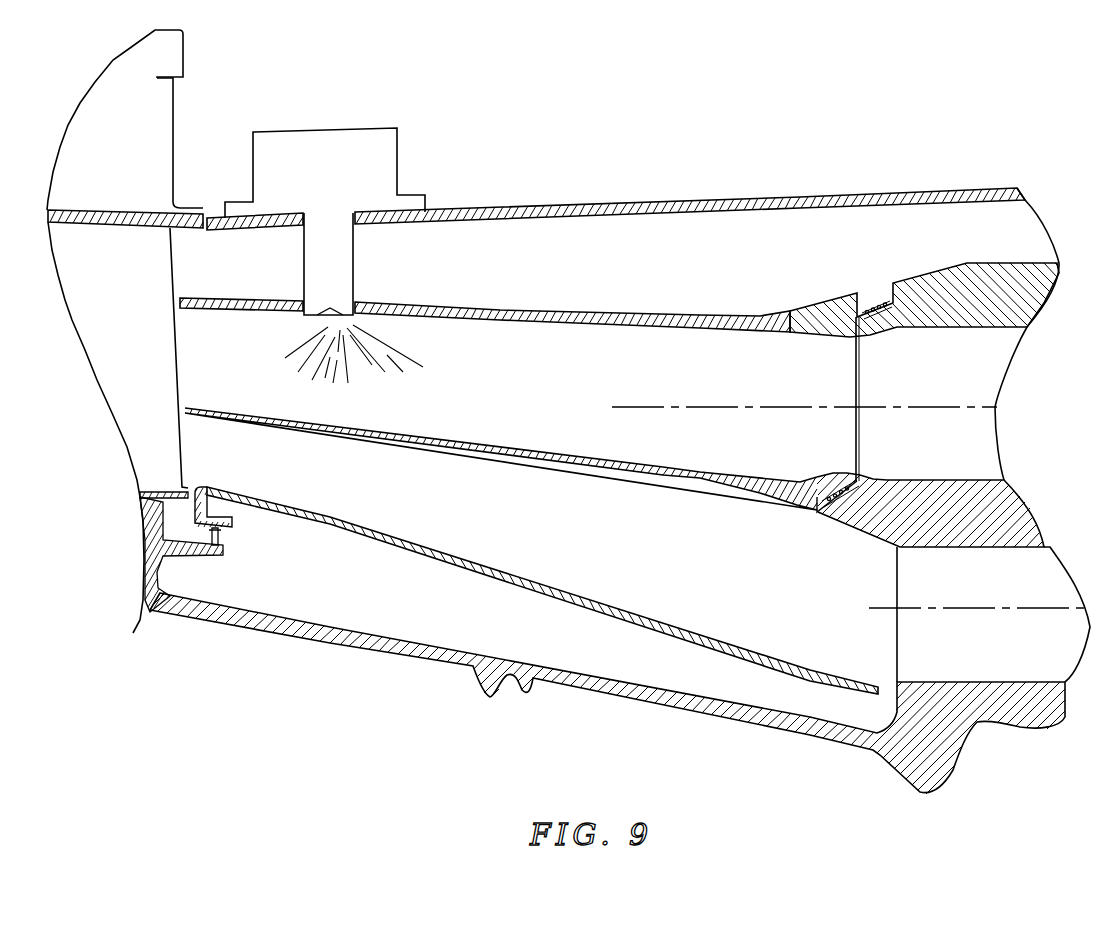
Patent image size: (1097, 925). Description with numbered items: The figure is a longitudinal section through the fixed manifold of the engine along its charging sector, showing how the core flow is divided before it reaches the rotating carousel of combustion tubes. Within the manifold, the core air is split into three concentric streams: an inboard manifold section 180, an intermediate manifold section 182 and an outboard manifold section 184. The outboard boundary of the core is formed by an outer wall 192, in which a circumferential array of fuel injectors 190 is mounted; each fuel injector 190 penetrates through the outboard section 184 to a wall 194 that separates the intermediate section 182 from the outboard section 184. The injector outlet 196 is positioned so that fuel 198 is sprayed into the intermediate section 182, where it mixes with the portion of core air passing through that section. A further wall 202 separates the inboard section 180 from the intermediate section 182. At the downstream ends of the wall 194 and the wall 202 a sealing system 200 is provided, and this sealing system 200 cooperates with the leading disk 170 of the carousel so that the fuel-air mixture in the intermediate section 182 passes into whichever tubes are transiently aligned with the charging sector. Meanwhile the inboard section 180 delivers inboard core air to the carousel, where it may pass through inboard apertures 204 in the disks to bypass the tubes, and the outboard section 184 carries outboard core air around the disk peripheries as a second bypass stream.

The leading disk 170 is at (965, 268).
The inboard manifold section 180 is at (610, 535).
The intermediate manifold section 182 is at (570, 376).
The outboard manifold section 184 is at (662, 278).
The fuel injector 190 is at (375, 170).
The outer wall 192 is at (510, 207).
The wall 194 is at (463, 303).
The injector outlet 196 is at (348, 317).
The fuel 198 is at (397, 372).
The sealing system 200 is at (847, 492).
The wall 202 is at (493, 450).
The inboard apertures 204 is at (958, 620).